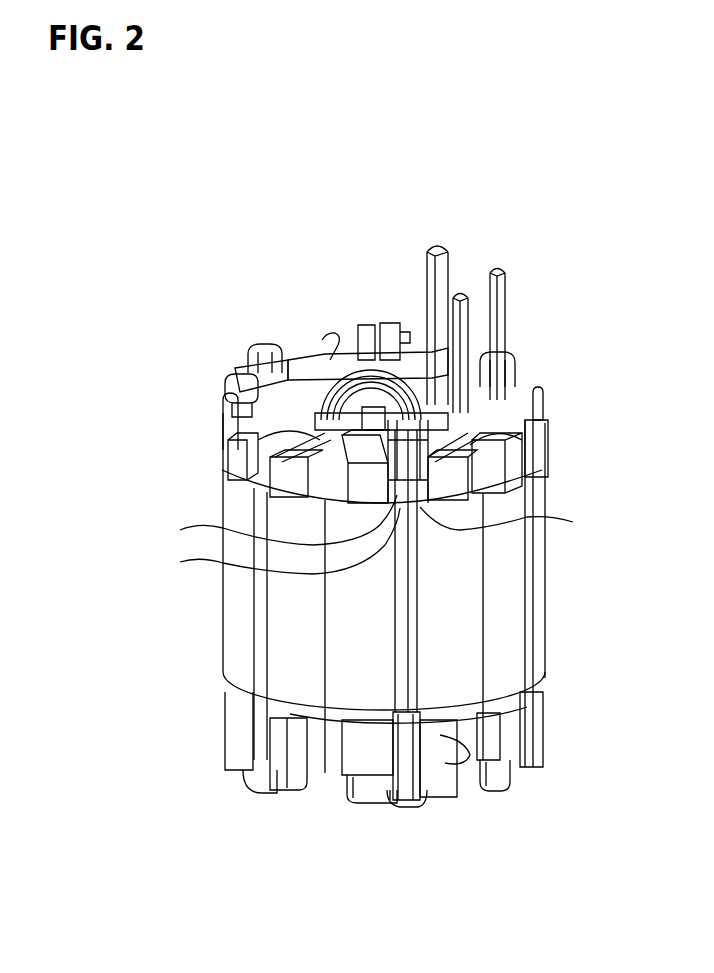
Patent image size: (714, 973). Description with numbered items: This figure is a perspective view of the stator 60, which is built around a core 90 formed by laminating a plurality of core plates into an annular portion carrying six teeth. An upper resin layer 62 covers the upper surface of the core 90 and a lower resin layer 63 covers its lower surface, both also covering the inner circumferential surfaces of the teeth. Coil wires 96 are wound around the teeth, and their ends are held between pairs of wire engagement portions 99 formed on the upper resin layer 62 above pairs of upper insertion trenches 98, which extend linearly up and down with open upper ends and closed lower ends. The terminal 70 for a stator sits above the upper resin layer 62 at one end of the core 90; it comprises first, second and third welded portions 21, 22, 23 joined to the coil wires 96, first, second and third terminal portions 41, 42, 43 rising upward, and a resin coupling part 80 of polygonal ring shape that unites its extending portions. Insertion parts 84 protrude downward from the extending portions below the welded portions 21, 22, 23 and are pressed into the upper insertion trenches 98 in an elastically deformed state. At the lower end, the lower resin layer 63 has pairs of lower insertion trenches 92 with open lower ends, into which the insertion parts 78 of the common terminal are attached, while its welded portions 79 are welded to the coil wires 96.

The first welded portion 21 is at (232, 402).
The second welded portion 22 is at (362, 325).
The third welded portion 23 is at (258, 347).
The first terminal portion 41 is at (437, 247).
The second terminal portion 42 is at (497, 267).
The third terminal portion 43 is at (461, 292).
The stator 60 is at (566, 323).
The upper resin layer 62 is at (520, 478).
The lower resin layer 63 is at (545, 712).
The terminal for a stator 70 is at (545, 200).
The insertion part 78 is at (412, 800).
The welded portion 79 is at (398, 806).
The coupling part 80 is at (300, 352).
The insertion part 84 is at (276, 542).
The core 90 is at (545, 627).
The lower insertion trench 92 is at (376, 803).
The coil wire 96 is at (327, 337).
The upper insertion trench 98 is at (375, 520).
The wire engagement portion 99 is at (245, 393).